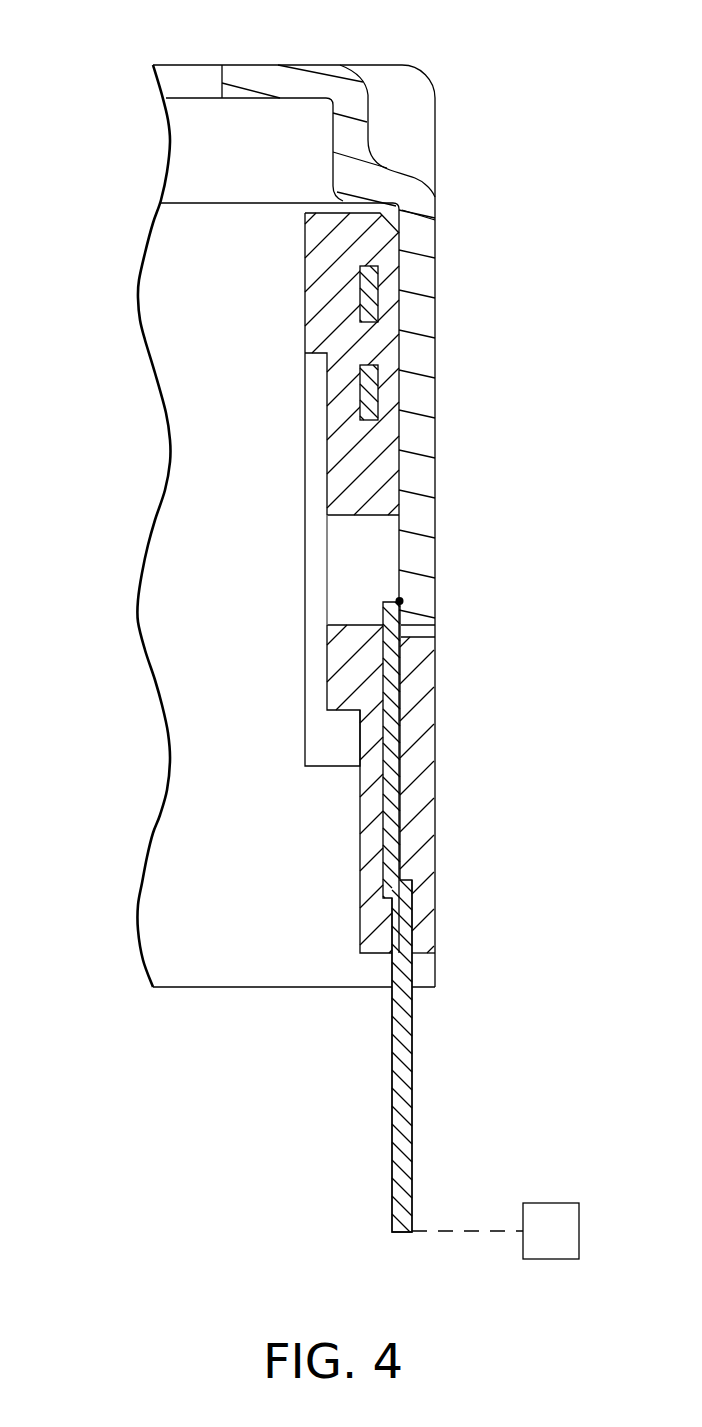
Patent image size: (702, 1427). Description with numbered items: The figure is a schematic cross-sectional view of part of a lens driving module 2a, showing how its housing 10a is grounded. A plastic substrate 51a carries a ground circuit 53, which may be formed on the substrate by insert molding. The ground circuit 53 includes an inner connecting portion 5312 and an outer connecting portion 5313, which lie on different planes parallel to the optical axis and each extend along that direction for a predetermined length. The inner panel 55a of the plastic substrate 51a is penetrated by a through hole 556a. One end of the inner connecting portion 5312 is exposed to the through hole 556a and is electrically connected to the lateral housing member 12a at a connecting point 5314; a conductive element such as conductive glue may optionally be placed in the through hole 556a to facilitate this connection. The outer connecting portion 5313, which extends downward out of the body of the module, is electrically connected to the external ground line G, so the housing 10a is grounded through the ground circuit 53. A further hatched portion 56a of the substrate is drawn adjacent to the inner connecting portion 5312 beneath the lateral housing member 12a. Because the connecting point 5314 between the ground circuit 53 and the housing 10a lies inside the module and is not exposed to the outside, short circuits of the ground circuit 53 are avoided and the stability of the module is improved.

The lens driving module 2a is at (86, 64).
The housing 10a is at (440, 158).
The lateral housing member 12a is at (415, 320).
The plastic substrate 51a is at (325, 321).
The inner panel 55a is at (375, 480).
The through hole 556a is at (366, 556).
The connecting point 5314 is at (405, 599).
The inner connecting portion 5312 is at (393, 663).
The ground circuit 53 is at (406, 762).
The supporting portion 56a is at (417, 815).
The outer connecting portion 5313 is at (405, 1084).
The external ground line G is at (550, 1203).